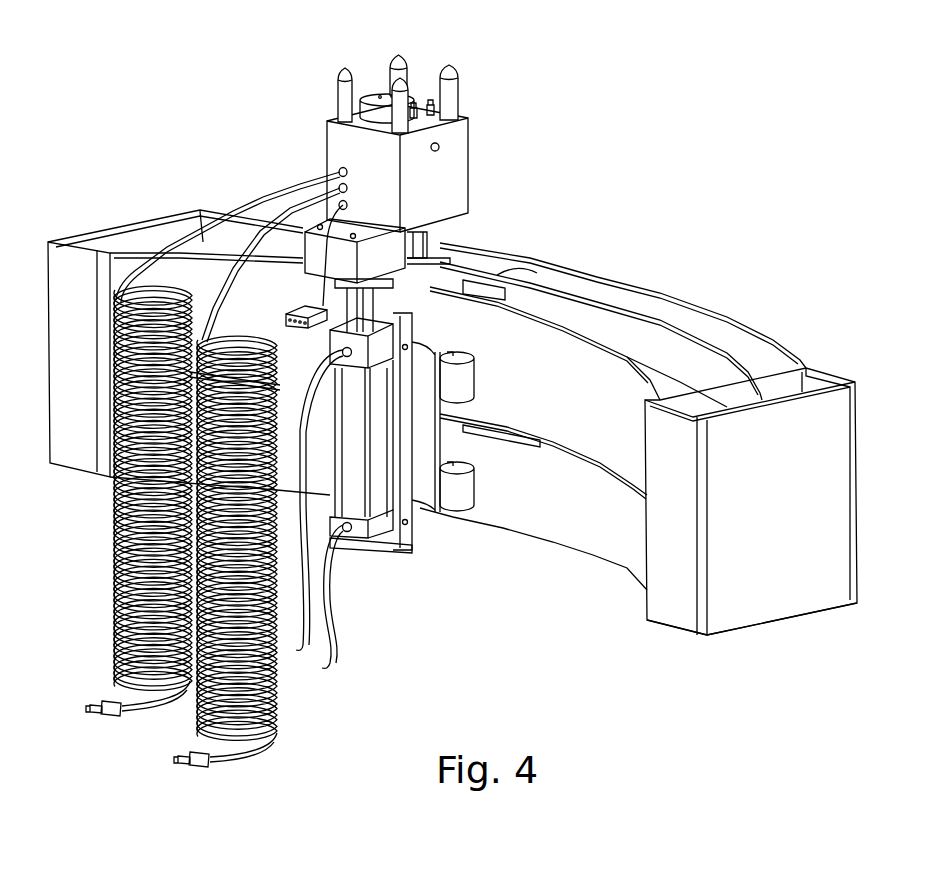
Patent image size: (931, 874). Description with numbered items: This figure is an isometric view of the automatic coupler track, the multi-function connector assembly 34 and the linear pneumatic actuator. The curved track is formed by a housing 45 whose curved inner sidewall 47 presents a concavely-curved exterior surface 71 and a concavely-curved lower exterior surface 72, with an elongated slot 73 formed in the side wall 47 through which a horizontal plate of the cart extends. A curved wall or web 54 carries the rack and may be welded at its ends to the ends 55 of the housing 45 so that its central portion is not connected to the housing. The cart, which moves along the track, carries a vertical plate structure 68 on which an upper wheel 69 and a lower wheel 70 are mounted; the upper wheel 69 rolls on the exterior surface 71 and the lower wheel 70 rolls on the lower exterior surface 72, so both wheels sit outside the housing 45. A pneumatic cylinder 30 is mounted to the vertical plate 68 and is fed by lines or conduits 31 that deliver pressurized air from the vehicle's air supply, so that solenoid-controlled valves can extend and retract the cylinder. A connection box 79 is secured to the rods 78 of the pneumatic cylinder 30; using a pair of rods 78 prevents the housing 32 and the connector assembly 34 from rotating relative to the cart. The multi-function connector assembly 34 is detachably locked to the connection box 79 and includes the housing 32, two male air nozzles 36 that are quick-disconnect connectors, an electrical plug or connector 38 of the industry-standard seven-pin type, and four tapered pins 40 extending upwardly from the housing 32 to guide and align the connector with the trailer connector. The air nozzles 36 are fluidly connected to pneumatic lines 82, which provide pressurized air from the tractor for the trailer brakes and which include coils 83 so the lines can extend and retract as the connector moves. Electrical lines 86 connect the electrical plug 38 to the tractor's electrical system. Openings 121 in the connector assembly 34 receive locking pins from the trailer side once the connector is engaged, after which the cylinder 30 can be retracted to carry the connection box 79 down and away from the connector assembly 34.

The pneumatic cylinder 30 is at (353, 540).
The lines or conduits 31 is at (330, 665).
The housing 32 is at (472, 200).
The multi-function connector assembly 34 is at (472, 167).
The male air nozzles 36 is at (432, 100).
The electrical plug or connector 38 is at (375, 92).
The tapered pins 40 is at (398, 66).
The housing 45 is at (752, 628).
The inner sidewall 47 is at (627, 562).
The curved wall or web 54 is at (623, 310).
The ends 55 is at (92, 238).
The vertical plate structure 68 is at (428, 497).
The upper wheel 69 is at (467, 382).
The lower wheel 70 is at (465, 494).
The exterior surface 71 is at (583, 357).
The lower exterior surface 72 is at (580, 538).
The elongated slot 73 is at (600, 463).
The rods 78 is at (355, 318).
The connection box 79 is at (320, 259).
The pneumatic lines 82 is at (137, 710).
The coils 83 is at (118, 568).
The electrical lines 86 is at (363, 258).
The openings 121 is at (440, 147).